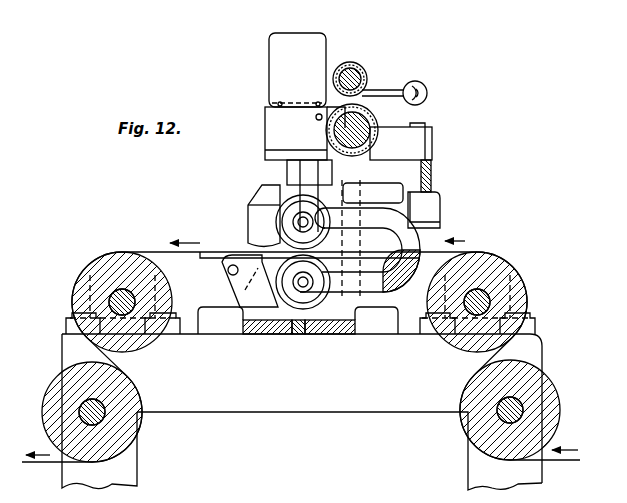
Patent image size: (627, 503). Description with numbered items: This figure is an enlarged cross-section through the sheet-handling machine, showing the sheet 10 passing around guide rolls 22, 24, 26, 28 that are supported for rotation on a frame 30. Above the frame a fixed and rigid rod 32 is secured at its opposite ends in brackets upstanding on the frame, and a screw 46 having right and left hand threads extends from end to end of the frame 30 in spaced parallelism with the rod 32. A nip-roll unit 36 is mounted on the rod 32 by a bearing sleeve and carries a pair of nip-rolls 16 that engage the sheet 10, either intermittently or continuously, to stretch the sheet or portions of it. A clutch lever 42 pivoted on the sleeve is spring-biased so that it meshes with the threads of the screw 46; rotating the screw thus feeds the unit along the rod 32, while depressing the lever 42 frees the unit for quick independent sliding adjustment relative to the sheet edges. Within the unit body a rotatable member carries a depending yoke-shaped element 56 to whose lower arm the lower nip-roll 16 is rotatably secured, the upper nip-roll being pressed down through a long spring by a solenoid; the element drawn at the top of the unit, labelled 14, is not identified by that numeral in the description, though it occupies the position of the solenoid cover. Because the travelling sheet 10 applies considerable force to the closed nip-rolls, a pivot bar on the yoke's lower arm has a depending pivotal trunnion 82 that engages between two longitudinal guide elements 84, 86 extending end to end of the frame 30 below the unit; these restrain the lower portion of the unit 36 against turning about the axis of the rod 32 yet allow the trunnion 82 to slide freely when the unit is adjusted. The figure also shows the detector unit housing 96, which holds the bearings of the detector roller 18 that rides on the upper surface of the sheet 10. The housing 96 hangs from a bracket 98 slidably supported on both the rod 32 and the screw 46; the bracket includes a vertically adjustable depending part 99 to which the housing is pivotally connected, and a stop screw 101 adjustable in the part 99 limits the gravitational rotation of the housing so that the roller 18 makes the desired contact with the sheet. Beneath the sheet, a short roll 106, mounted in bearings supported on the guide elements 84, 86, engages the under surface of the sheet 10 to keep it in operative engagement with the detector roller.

The sheet 10 is at (440, 250).
The motor housing 14 is at (268, 70).
The nip-rolls 16 is at (282, 262).
The detector roller 18 is at (258, 252).
The guide roll 22 is at (553, 392).
The guide roll 24 is at (525, 285).
The guide roll 26 is at (102, 266).
The guide roll 28 is at (60, 390).
The frame 30 is at (252, 414).
The rod 32 is at (365, 128).
The nip-roll unit 36 is at (262, 118).
The clutch lever 42 is at (418, 83).
The screw 46 is at (356, 72).
The yoke-shaped element 56 is at (428, 208).
The pivotal trunnion 82 is at (304, 336).
The guide element 84 is at (278, 336).
The guide element 86 is at (342, 336).
The unit housing 96 is at (246, 212).
The bracket 98 is at (408, 140).
The depending part 99 is at (430, 172).
The stop screw 101 is at (418, 262).
The short roll 106 is at (222, 262).